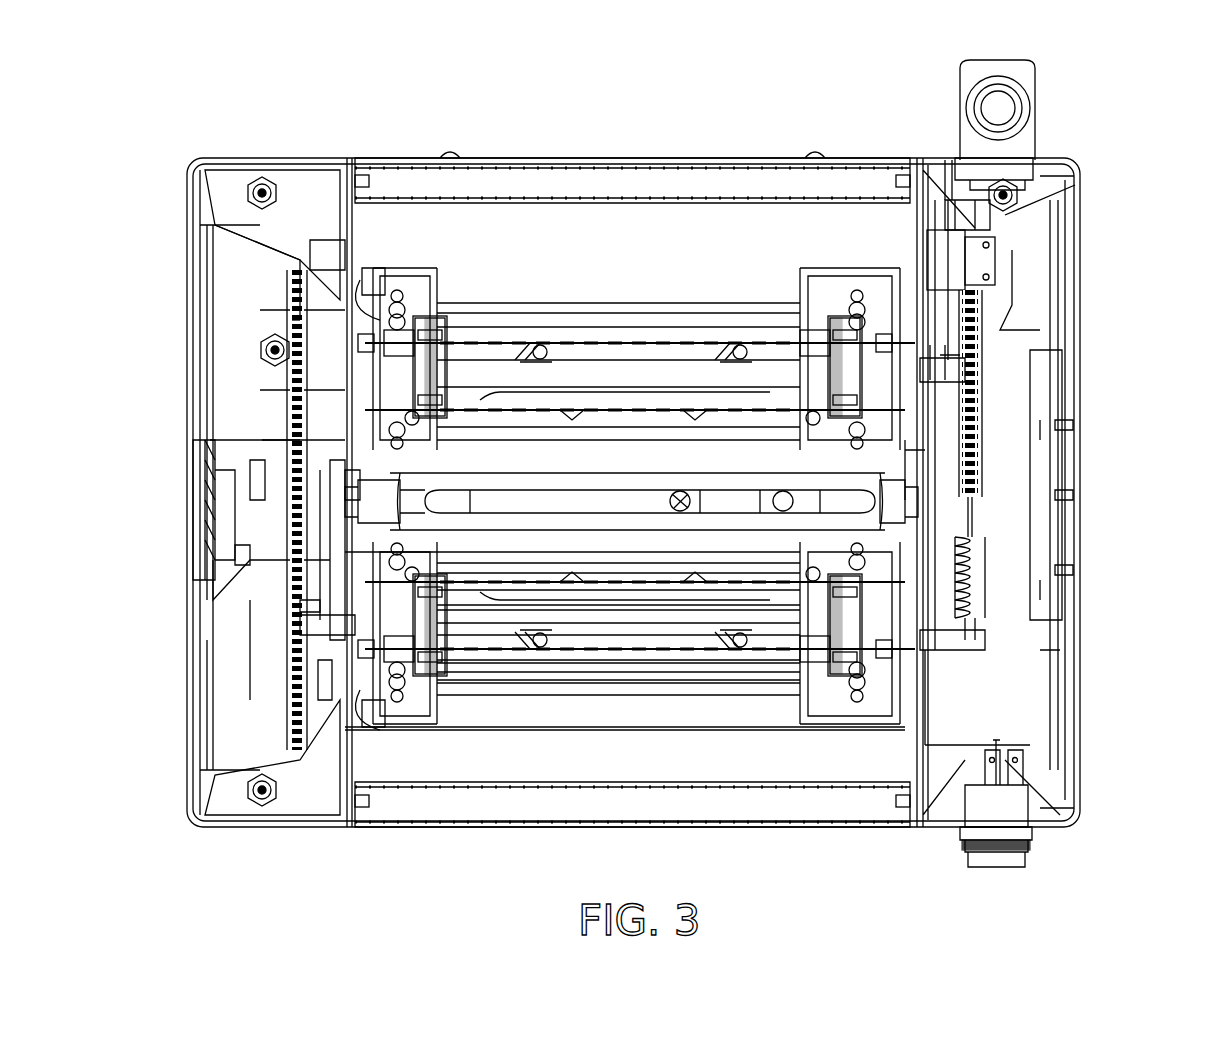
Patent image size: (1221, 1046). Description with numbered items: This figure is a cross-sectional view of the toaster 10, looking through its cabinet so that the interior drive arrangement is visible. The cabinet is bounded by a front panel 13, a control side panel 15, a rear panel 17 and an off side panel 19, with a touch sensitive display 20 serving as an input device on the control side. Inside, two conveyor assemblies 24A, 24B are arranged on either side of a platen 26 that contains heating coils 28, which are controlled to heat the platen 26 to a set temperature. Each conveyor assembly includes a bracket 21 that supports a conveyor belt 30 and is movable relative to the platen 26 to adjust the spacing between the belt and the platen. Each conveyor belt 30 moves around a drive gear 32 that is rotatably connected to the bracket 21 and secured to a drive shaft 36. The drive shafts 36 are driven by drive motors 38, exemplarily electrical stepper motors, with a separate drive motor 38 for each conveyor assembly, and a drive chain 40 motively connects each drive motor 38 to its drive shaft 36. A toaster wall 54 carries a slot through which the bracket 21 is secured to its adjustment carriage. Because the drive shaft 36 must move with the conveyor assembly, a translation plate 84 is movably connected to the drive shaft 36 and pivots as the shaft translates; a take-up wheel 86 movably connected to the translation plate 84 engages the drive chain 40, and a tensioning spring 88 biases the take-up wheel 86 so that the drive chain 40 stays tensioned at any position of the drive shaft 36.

The toaster 10 is at (1122, 118).
The front panel 13 is at (690, 830).
The control side panel 15 is at (190, 262).
The rear panel 17 is at (630, 162).
The off side panel 19 is at (1065, 325).
The touch sensitive display 20 is at (205, 478).
The bracket 21 is at (380, 300).
The conveyor assembly 24A is at (528, 698).
The conveyor assembly 24B is at (636, 555).
The platen 26 is at (435, 515).
The heating coils 28 is at (575, 500).
The conveyor belt 30 is at (605, 305).
The drive gear 32 is at (422, 330).
The drive shaft 36 is at (945, 372).
The drive motor 38 is at (990, 260).
The drive chain 40 is at (940, 368).
The toaster wall 54 is at (345, 440).
The translation plate 84 is at (295, 522).
The take-up wheel 86 is at (945, 215).
The tensioning spring 88 is at (985, 572).